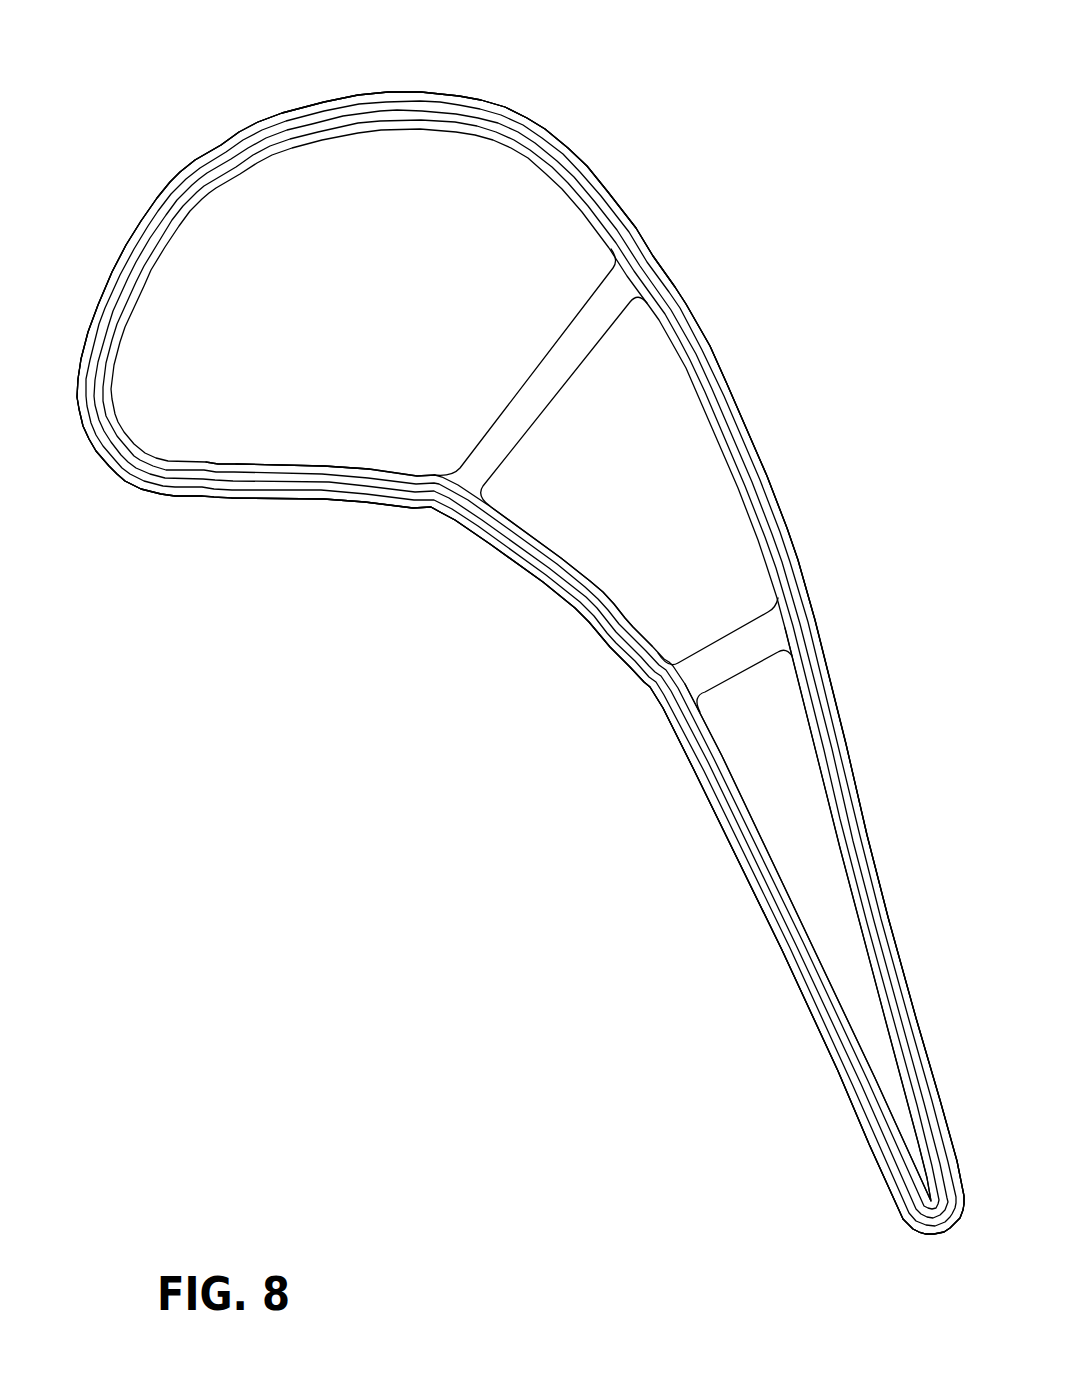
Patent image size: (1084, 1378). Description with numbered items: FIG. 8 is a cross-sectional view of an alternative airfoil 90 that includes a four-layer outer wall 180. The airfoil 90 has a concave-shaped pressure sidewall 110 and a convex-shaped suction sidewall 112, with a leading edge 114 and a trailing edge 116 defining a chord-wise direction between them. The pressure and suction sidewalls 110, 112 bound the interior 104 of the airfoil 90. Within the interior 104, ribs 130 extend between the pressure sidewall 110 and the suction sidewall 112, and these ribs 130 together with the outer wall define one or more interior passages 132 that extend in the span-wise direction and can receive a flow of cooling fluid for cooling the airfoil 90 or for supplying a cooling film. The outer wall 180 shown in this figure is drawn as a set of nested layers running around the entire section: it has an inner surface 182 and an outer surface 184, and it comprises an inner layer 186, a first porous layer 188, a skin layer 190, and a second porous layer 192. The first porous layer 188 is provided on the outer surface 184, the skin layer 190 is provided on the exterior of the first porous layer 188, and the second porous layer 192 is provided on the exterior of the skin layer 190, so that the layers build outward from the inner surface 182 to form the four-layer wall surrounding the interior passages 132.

The airfoil 90 is at (502, 663).
The interior 104 is at (268, 436).
The pressure sidewall 110 is at (513, 563).
The suction sidewall 112 is at (664, 277).
The leading edge 114 is at (92, 447).
The trailing edge 116 is at (940, 1240).
The ribs 130 is at (579, 320).
The interior passages 132 is at (365, 323).
The four-layer outer wall 180 is at (520, 629).
The inner surface 182 is at (393, 132).
The outer surface 184 is at (410, 117).
The inner layer 186 is at (673, 332).
The first porous layer 188 is at (683, 347).
The skin layer 190 is at (708, 383).
The second porous layer 192 is at (728, 407).